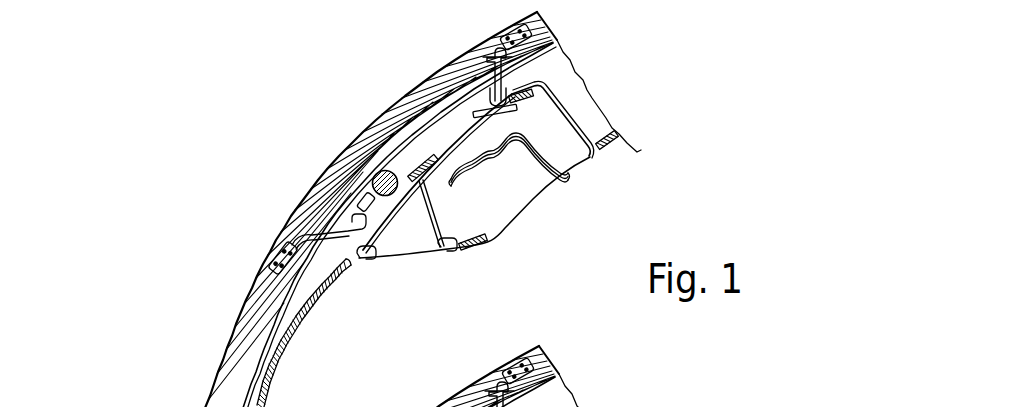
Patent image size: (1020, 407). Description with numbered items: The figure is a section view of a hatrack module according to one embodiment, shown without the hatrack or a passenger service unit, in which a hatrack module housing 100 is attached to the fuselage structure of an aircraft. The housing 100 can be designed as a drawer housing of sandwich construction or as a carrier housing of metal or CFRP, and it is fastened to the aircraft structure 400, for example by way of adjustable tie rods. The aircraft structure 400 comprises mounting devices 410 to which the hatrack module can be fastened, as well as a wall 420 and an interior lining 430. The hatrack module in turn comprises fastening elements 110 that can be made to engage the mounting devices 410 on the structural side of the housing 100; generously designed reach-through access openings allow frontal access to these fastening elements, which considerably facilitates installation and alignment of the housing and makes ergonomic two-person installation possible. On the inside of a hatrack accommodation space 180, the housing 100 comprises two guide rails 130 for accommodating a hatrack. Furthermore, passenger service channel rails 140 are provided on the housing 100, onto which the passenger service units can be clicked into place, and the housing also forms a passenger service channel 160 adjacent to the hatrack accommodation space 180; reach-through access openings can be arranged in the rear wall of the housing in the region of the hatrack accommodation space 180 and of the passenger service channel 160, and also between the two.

The hatrack module housing 100 is at (603, 64).
The fastening elements 110 is at (481, 104).
The guide rails 130 is at (565, 182).
The passenger service channel rails 140 is at (373, 262).
The passenger service channel 160 is at (418, 263).
The hatrack accommodation space 180 is at (520, 210).
The aircraft structure 400 is at (170, 327).
The mounting devices 410 is at (317, 190).
The wall 420 is at (257, 290).
The interior lining 430 is at (293, 336).